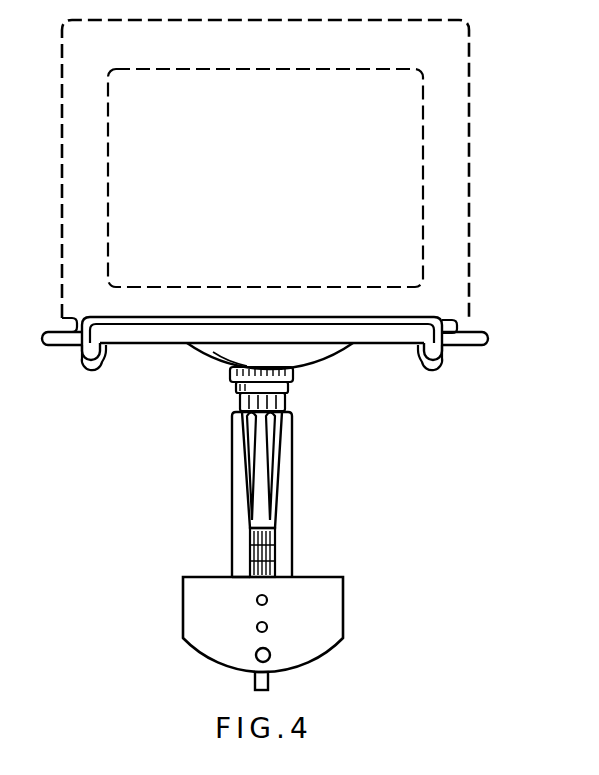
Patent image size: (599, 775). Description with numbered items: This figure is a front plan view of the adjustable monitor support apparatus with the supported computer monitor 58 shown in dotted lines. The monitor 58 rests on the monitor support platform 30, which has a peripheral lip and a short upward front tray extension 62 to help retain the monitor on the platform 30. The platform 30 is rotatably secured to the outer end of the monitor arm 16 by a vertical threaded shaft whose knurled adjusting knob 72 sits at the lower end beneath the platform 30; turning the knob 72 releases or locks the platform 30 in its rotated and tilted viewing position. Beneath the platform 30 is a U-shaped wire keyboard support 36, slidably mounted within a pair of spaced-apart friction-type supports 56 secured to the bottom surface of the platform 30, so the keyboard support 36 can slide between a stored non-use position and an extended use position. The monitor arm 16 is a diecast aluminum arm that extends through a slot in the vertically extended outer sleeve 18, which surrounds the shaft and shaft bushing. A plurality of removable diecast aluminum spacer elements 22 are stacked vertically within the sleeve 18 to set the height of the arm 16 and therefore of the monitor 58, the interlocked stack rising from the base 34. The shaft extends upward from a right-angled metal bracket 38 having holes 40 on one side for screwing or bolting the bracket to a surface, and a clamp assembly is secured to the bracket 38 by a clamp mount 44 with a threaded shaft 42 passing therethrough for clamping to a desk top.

The monitor arm 16 is at (276, 461).
The outer sleeve 18 is at (233, 494).
The spacer elements 22 is at (276, 549).
The monitor support platform 30 is at (470, 346).
The base 34 is at (236, 577).
The keyboard support 36 is at (456, 323).
The right-angled metal bracket 38 is at (324, 631).
The holes 40 is at (257, 626).
The threaded shaft 42 is at (269, 684).
The clamp mount 44 is at (271, 655).
The friction-type supports 56 is at (101, 362).
The computer monitor 58 is at (276, 122).
The front tray extension 62 is at (62, 319).
The knurled adjusting knob 72 is at (284, 398).